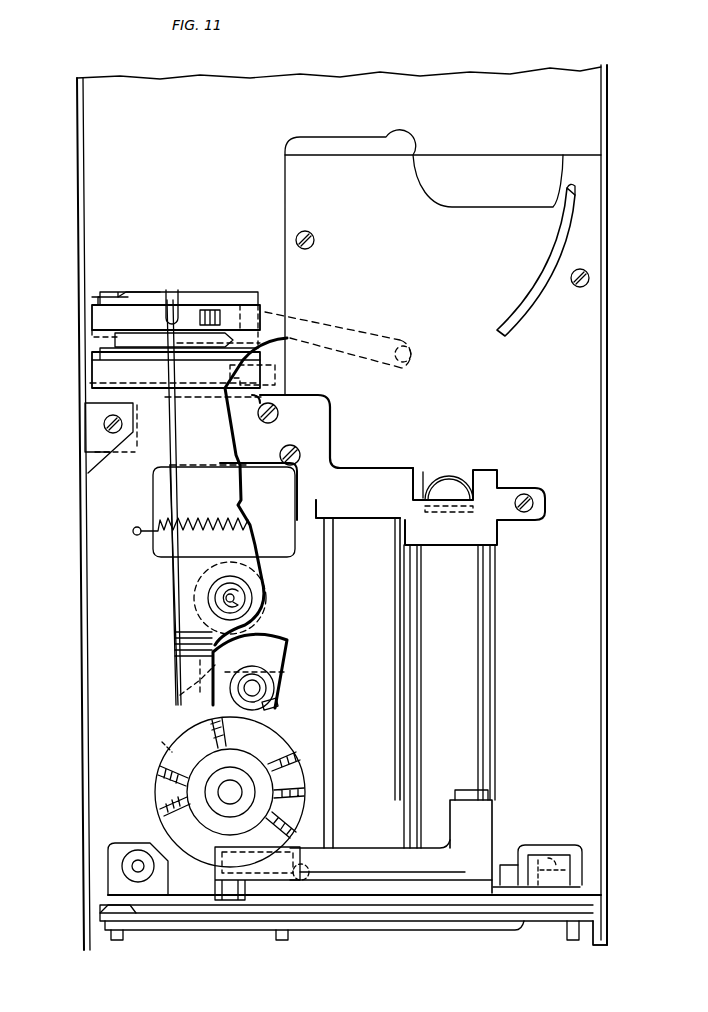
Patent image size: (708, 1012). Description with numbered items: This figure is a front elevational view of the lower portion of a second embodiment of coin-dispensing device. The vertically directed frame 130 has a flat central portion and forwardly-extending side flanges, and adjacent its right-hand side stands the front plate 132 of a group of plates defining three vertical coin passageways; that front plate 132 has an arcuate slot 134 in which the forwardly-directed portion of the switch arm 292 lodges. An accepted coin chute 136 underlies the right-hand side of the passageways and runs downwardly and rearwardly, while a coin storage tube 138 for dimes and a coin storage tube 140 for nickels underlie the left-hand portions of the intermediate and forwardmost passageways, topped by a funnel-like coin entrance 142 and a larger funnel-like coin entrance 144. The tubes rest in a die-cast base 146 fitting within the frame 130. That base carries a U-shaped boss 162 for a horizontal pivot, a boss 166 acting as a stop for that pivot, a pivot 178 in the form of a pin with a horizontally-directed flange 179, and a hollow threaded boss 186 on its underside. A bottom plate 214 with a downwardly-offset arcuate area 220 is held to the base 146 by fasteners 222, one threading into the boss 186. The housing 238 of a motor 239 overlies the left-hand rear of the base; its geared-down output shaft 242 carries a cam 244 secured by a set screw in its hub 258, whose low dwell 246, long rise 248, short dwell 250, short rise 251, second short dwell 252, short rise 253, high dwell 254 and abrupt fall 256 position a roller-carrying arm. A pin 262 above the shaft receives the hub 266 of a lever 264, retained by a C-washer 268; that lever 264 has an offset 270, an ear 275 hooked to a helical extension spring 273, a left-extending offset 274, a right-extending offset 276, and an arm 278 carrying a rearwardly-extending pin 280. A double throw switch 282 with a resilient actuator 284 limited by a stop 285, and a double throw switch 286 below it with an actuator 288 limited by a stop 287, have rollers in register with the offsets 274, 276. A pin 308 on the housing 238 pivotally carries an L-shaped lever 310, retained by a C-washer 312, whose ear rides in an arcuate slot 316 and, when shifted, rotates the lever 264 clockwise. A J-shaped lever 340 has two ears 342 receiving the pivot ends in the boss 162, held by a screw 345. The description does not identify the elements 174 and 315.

The frame 130 is at (88, 210).
The front plate 132 is at (585, 347).
The arcuate slot 134 is at (563, 240).
The accepted coin chute 136 is at (598, 722).
The coin storage tube 138 is at (473, 700).
The coin storage tube 140 is at (380, 743).
The funnel-like coin entrance 142 is at (455, 535).
The funnel-like coin entrance 144 is at (372, 513).
The base 146 is at (603, 923).
The upwardly-extending boss 162 is at (567, 887).
The upwardly-extending boss 166 is at (507, 866).
The mounting bracket 174 is at (112, 853).
The pivot 178 is at (483, 790).
The horizontally-directed flange 179 is at (470, 888).
The boss 186 is at (118, 912).
The bottom plate 214 is at (352, 930).
The downwardly-offset area 220 is at (490, 933).
The fasteners 222 is at (118, 942).
The motor housing 238 is at (92, 598).
The motor 239 is at (283, 552).
The output shaft 242 is at (232, 790).
The cam 244 is at (135, 826).
The low dwell 246 is at (180, 755).
The long rise 248 is at (287, 733).
The short dwell 250 is at (298, 788).
The short rise 251 is at (303, 807).
The second short dwell 252 is at (297, 823).
The short rise 253 is at (295, 812).
The high dwell 254 is at (180, 830).
The abrupt fall 256 is at (167, 783).
The hub 258 is at (223, 810).
The pin 262 is at (233, 594).
The lever 264 is at (178, 570).
The hub 266 is at (253, 588).
The C-washer 268 is at (228, 596).
The offset 270 is at (192, 645).
The helical extension spring 273 is at (162, 522).
The offset 274 is at (207, 317).
The ear 275 is at (252, 508).
The offset 276 is at (270, 375).
The arm 278 is at (395, 325).
The pin 280 is at (412, 354).
The double throw switch 282 is at (140, 303).
The resilient actuator 284 is at (112, 318).
The stop 285 is at (170, 313).
The double throw switch 286 is at (137, 388).
The stop 287 is at (173, 362).
The resilient actuator 288 is at (155, 383).
The switch arm 292 is at (572, 197).
The pin 308 is at (255, 688).
The L-shaped lever 310 is at (258, 668).
The C-washer 312 is at (270, 702).
The arm 315 is at (203, 673).
The arcuate slot 316 is at (275, 634).
The J-shaped lever 340 is at (563, 845).
The ears 342 is at (585, 870).
The screw 345 is at (540, 868).